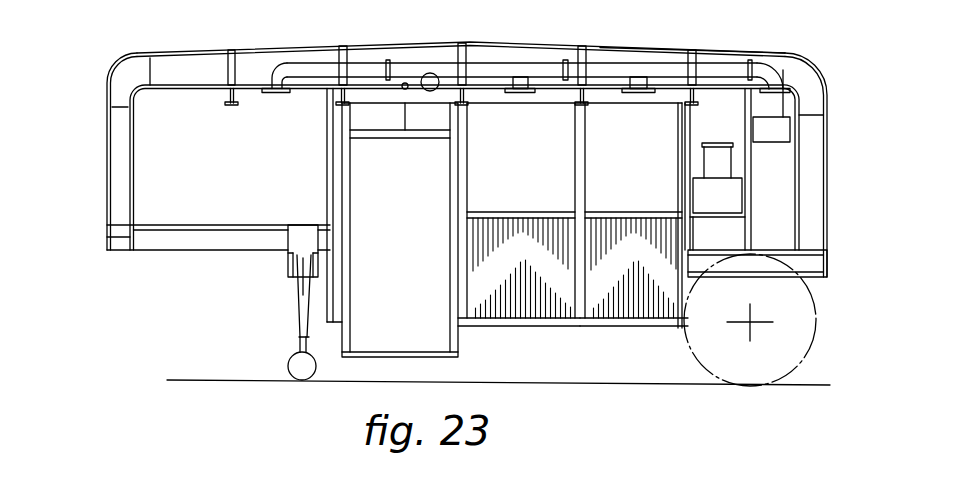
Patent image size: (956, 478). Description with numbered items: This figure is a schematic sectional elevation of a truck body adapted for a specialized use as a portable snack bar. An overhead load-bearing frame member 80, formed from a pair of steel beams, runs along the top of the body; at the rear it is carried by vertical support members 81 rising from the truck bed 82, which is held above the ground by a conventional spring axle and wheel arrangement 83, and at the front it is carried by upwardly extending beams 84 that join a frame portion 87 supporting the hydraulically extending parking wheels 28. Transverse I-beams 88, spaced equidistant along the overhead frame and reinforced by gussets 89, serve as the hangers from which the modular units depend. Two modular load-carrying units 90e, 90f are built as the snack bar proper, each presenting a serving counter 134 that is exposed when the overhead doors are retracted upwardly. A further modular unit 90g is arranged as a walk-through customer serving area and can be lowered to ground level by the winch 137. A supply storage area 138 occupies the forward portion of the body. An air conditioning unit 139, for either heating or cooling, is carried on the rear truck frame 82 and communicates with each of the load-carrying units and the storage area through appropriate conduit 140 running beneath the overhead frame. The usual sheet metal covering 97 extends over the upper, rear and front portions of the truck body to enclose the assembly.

The hydraulically extending parking wheels 28 is at (296, 306).
The overhead load-bearing frame member 80 is at (423, 52).
The vertical support members 81 is at (817, 200).
The truck bed 82 is at (815, 275).
The spring axle and wheel arrangement 83 is at (812, 350).
The upwardly extending beams 84 is at (110, 156).
The frame portion 87 is at (196, 250).
The transverse I-beams 88 is at (232, 107).
The gussets 89 is at (232, 63).
The modular load-carrying unit 90e is at (540, 328).
The modular load-carrying unit 90f is at (632, 328).
The modular unit 90g is at (352, 326).
The sheet metal covering 97 is at (673, 50).
The serving counters 134 is at (503, 213).
The winch 137 is at (431, 76).
The supply storage area 138 is at (240, 181).
The air conditioning unit 139 is at (791, 193).
The conduit 140 is at (598, 68).